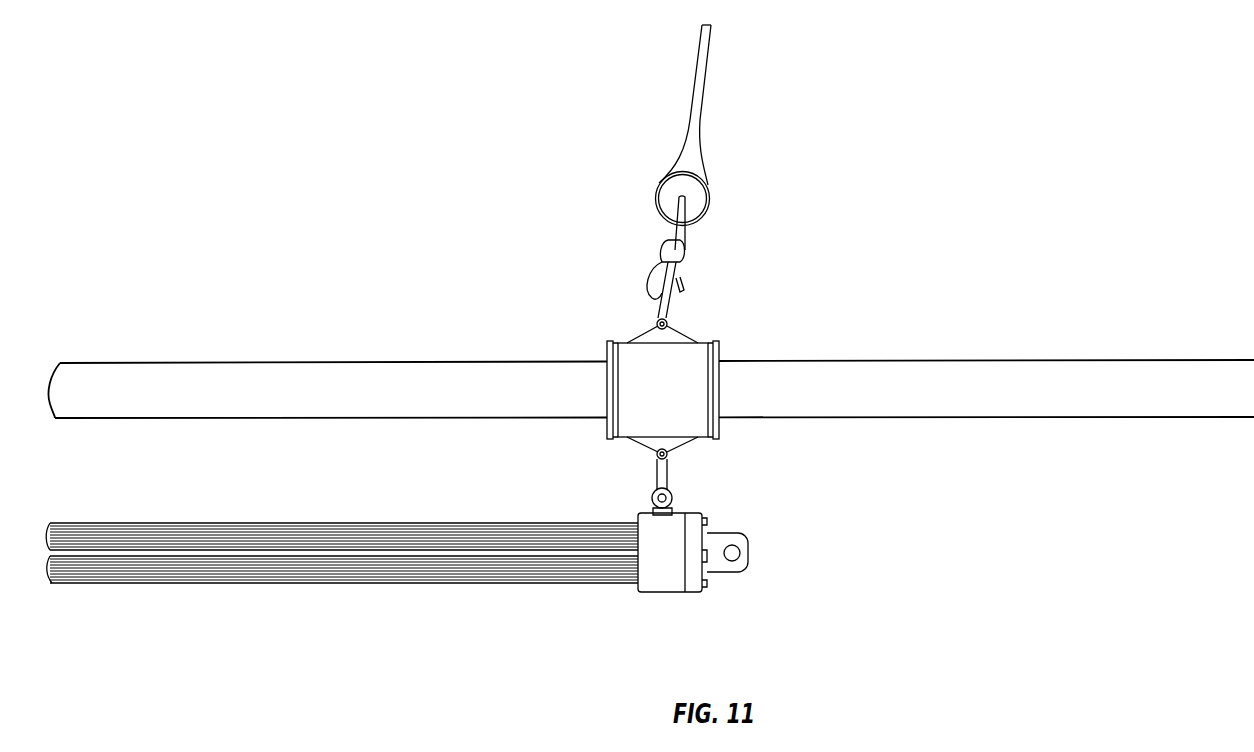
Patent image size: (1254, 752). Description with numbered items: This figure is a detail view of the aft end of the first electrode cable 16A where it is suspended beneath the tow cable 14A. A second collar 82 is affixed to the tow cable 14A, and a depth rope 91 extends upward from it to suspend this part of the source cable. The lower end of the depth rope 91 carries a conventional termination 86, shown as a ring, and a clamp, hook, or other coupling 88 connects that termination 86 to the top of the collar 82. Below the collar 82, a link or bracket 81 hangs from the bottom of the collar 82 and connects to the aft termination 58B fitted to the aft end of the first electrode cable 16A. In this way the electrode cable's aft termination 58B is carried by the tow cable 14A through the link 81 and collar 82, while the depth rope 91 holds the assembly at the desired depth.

The depth rope 91 is at (707, 82).
The termination 86 is at (710, 202).
The coupling 88 is at (660, 262).
The collar 82 is at (685, 332).
The tow cable 14A is at (853, 360).
The link or bracket 81 is at (668, 468).
The aft termination 58B is at (688, 592).
The first electrode cable 16A is at (355, 585).